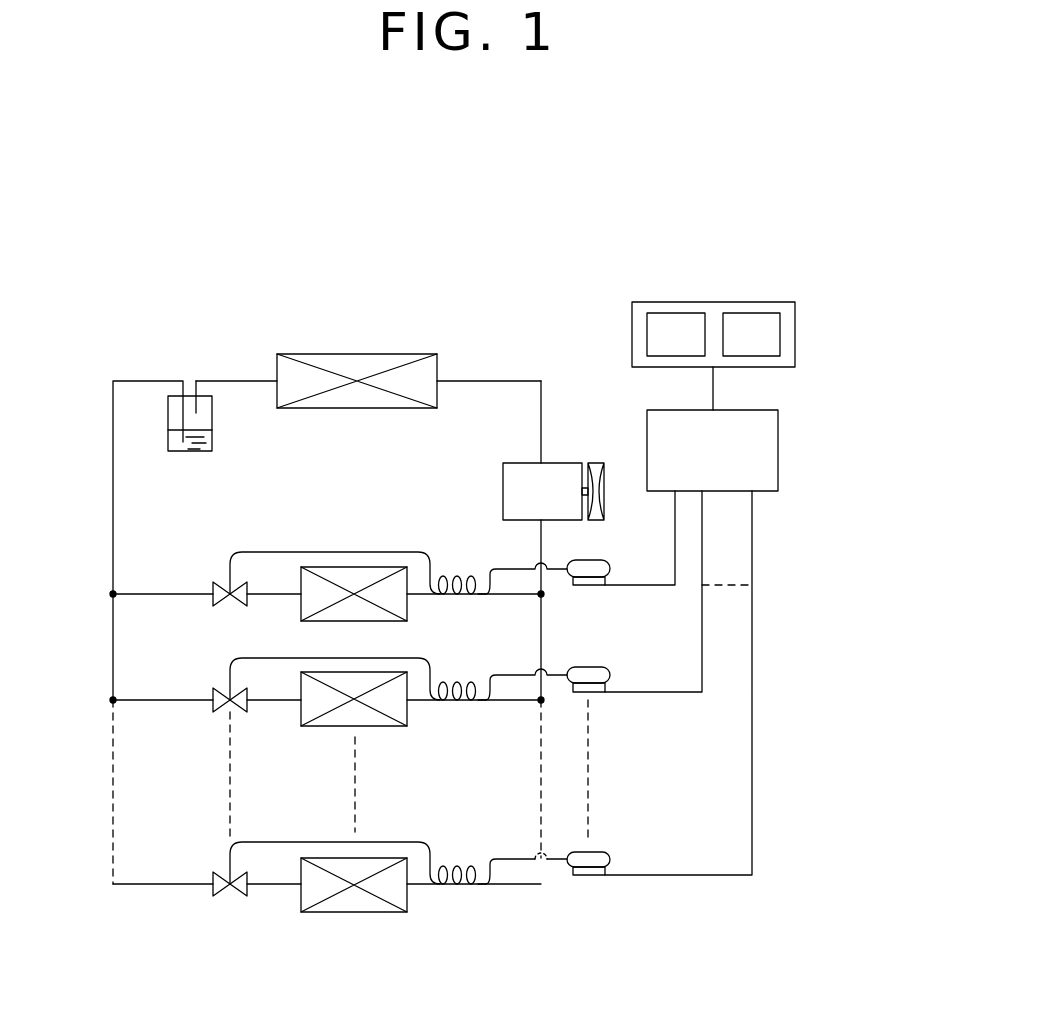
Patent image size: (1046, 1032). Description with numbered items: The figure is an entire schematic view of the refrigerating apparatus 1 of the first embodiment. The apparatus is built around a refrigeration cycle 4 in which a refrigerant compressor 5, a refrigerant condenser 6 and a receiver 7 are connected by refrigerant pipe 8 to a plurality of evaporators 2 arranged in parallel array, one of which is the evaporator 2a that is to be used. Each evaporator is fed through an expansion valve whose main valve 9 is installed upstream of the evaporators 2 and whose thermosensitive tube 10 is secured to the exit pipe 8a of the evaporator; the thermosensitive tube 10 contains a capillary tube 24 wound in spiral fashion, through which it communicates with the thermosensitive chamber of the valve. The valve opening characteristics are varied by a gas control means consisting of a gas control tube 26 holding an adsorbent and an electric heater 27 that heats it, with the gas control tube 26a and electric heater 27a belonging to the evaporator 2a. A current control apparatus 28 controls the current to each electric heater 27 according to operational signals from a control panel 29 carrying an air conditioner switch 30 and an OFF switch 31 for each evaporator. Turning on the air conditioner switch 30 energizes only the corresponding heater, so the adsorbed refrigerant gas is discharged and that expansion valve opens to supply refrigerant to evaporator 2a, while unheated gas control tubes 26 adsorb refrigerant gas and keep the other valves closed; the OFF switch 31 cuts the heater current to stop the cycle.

The refrigerating apparatus 1 is at (530, 347).
The evaporators 2 is at (330, 726).
The evaporator 2a is at (322, 567).
The refrigeration cycle 4 is at (556, 393).
The refrigerant compressor 5 is at (565, 463).
The refrigerant condenser 6 is at (307, 354).
The receiver 7 is at (168, 424).
The refrigerant pipe 8 is at (481, 381).
The exit pipe 8a is at (523, 594).
The main valve 9 is at (228, 582).
The thermosensitive tube 10 is at (457, 576).
The capillary tube 24 is at (370, 552).
The gas control tube 26 is at (590, 668).
The gas control tube 26a is at (590, 562).
The electric heater 27 is at (590, 692).
The electric heater 27a is at (588, 585).
The current control apparatus 28 is at (779, 460).
The control panel 29 is at (795, 337).
The air conditioner switch 30 is at (663, 313).
The OFF switch 31 is at (748, 313).